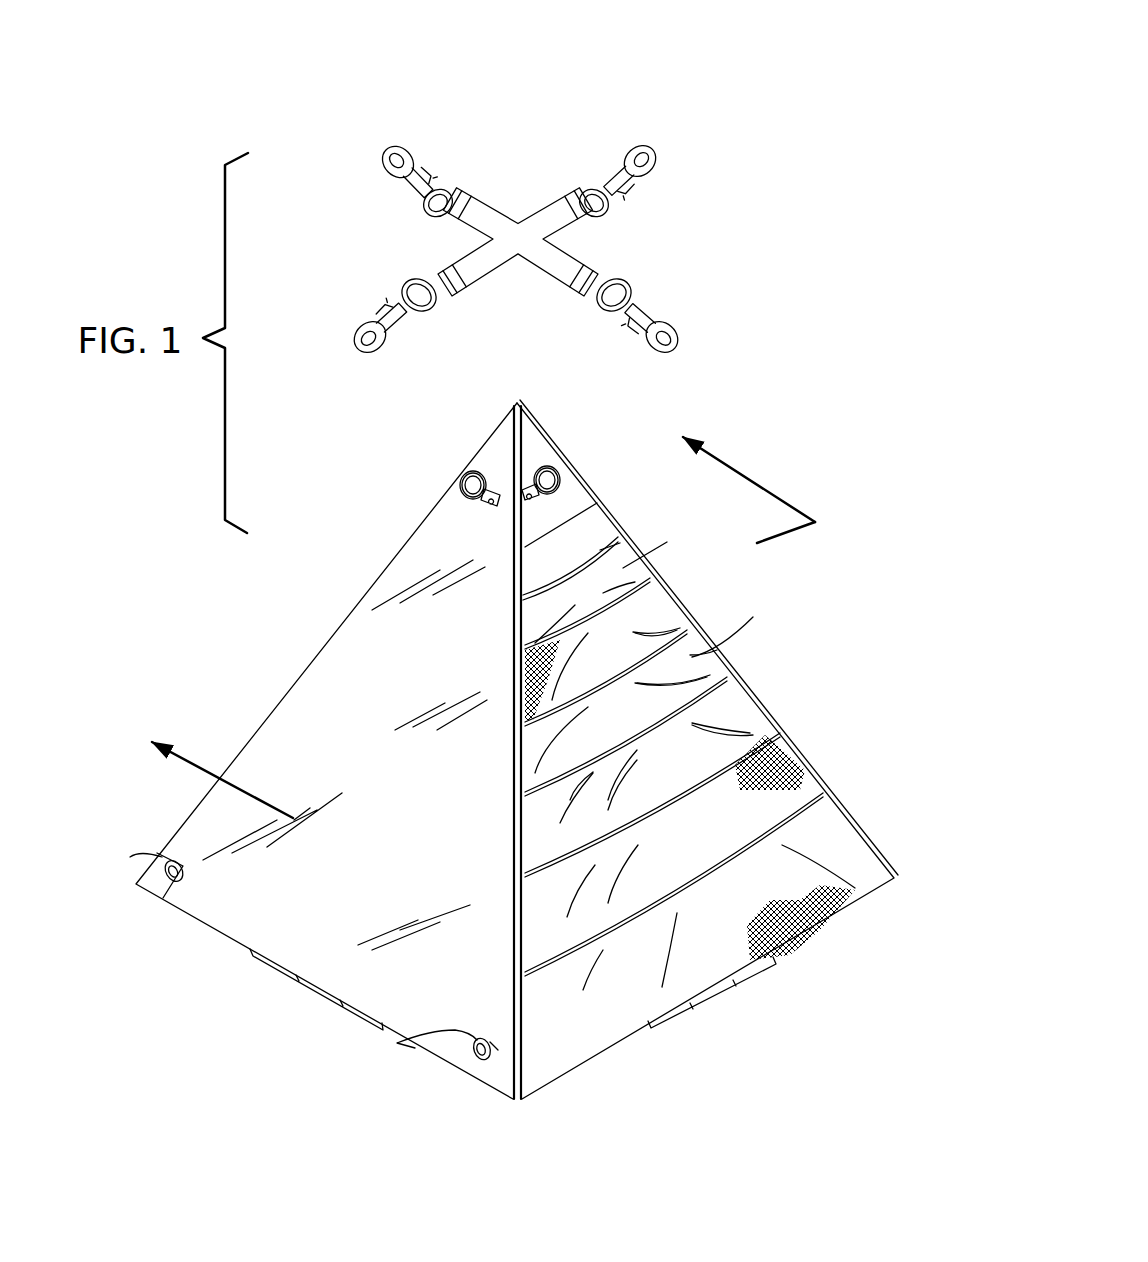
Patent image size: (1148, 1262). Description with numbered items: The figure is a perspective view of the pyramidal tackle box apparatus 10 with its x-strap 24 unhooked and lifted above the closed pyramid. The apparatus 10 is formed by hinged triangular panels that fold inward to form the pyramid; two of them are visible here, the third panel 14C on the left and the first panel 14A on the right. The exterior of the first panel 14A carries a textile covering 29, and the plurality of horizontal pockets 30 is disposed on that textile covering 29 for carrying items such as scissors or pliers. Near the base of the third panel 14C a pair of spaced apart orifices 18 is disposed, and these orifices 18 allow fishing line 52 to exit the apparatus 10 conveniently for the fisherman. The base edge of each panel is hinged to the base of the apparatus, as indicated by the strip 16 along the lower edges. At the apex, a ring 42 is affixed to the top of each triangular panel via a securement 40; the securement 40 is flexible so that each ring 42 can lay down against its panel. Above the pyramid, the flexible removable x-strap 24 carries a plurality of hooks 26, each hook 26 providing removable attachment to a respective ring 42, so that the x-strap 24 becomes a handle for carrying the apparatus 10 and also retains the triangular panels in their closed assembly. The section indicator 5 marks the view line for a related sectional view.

The pyramidal tackle box apparatus 10 is at (693, 118).
The x-strap 24 is at (655, 202).
The hooks 26 is at (425, 138).
The third panel 14C is at (425, 555).
The first panel 14A is at (865, 915).
The textile covering 29 is at (590, 530).
The horizontal pockets 30 is at (640, 567).
The securement 40 is at (467, 487).
The ring 42 is at (473, 468).
The section line 5 is at (483, 605).
The base strip 16 is at (310, 1000).
The orifices 18 is at (168, 884).
The fishing line 52 is at (162, 858).